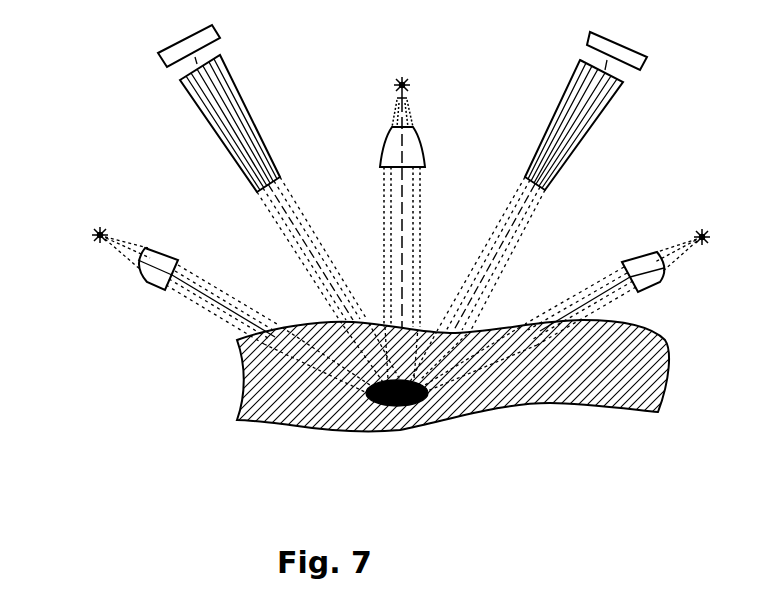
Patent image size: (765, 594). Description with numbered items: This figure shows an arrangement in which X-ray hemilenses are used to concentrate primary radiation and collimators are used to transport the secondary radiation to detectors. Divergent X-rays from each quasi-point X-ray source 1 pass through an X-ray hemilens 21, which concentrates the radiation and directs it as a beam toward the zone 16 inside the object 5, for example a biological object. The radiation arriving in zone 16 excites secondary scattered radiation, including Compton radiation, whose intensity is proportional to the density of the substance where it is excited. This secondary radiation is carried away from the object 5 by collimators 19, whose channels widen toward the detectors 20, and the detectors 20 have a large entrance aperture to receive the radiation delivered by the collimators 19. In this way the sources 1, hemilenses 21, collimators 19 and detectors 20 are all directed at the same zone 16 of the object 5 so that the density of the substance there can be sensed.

The X-ray source 1 is at (97, 242).
The object 5 is at (247, 377).
The zone 16 is at (352, 402).
The collimator 19 is at (207, 115).
The detector 20 is at (168, 60).
The X-ray hemilens 21 is at (150, 282).